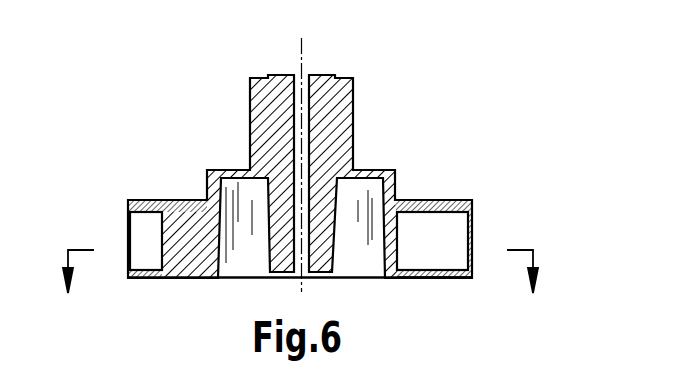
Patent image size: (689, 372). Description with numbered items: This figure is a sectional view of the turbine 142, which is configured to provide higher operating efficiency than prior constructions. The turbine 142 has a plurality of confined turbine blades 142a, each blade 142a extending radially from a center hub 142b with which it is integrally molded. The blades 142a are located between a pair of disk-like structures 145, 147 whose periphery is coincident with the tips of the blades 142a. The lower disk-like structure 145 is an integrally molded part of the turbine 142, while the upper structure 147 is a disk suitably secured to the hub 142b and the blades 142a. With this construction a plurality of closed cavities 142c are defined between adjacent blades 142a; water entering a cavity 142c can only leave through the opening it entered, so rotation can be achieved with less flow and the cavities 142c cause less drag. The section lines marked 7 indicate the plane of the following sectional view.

The turbine 142 is at (367, 190).
The confined turbine blades 142a is at (192, 242).
The center hub 142b is at (397, 172).
The closed cavities 142c is at (450, 237).
The lower disk-like structure 145 is at (429, 278).
The upper disk-like structure 147 is at (440, 203).
The section line 7- 7 is at (300, 285).